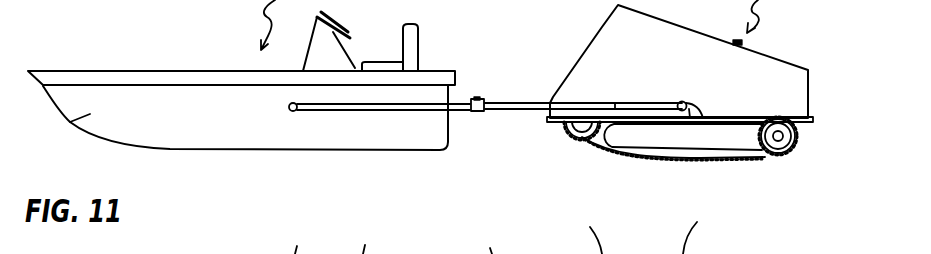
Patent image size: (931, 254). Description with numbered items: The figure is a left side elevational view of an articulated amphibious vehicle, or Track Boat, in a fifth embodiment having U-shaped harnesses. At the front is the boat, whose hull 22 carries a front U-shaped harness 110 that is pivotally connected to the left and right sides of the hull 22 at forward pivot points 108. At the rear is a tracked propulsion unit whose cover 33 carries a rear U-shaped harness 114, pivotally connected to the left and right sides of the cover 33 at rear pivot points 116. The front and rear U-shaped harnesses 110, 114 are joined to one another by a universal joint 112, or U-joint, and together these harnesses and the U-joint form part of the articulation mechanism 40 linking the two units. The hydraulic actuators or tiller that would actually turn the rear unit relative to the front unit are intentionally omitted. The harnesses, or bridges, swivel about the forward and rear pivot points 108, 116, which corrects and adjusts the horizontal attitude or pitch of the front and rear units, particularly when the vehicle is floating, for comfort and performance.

The hull 22 is at (70, 123).
The articulation mechanism 40 is at (511, 126).
The cover 33 is at (777, 80).
The forward pivot points 108 is at (294, 112).
The front U-shaped harness 110 is at (380, 111).
The universal joint 112 is at (483, 112).
The rear U-shaped harness 114 is at (617, 106).
The rear pivot points 116 is at (709, 118).